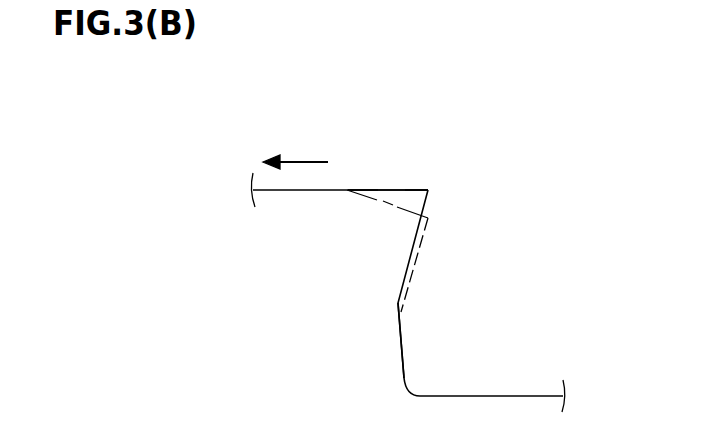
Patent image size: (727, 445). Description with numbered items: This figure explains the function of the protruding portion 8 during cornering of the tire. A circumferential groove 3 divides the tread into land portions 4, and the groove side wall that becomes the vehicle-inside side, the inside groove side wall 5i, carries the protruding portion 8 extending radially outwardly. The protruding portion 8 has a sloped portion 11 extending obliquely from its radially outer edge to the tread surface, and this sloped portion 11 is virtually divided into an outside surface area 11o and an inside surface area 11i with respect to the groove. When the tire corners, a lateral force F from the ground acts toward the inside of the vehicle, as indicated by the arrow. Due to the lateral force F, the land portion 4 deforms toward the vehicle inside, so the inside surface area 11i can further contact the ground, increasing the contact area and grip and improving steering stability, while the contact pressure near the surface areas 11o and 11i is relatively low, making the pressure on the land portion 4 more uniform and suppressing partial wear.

The circumferential groove 3 is at (534, 365).
The land portion 4 is at (318, 295).
The inside groove side wall 5i is at (418, 333).
The protruding portion 8 is at (425, 203).
The sloped portion 11 is at (468, 98).
The outside surface area 11o is at (373, 190).
The inside surface area 11i is at (413, 190).
The lateral force F is at (305, 157).